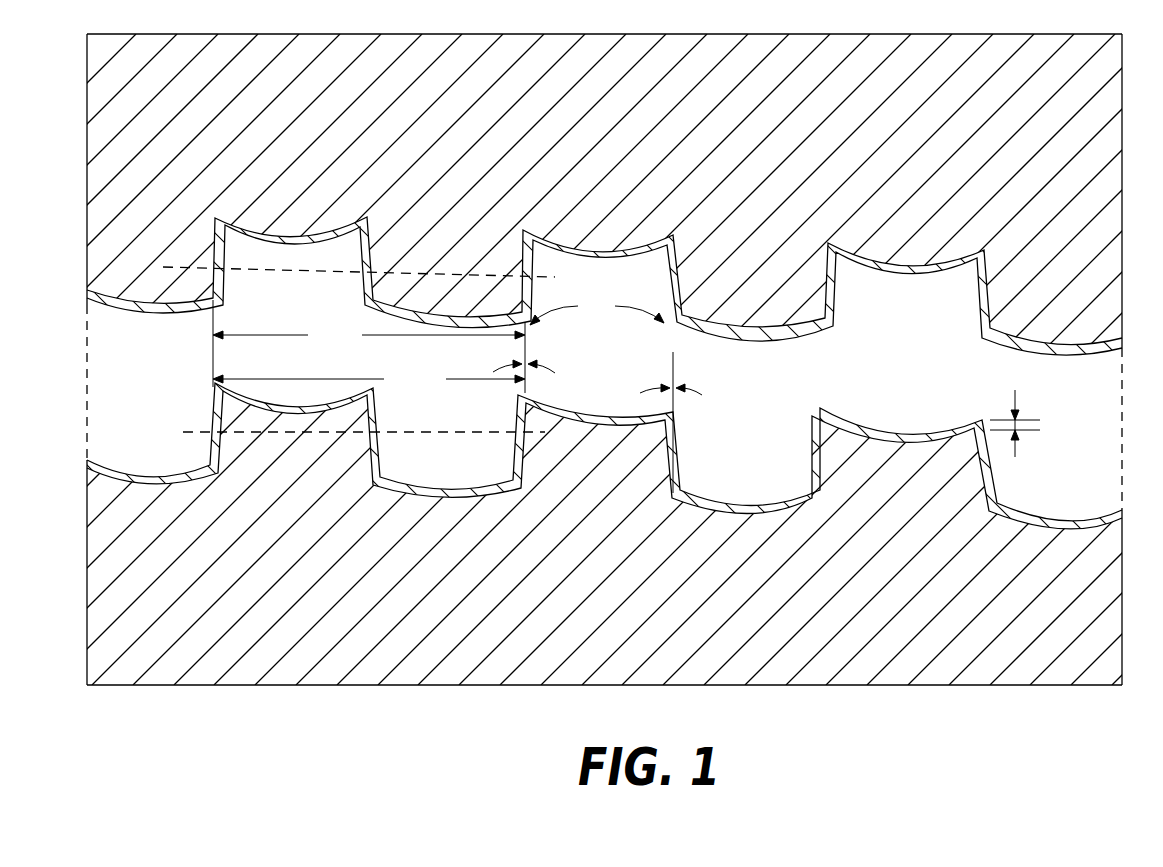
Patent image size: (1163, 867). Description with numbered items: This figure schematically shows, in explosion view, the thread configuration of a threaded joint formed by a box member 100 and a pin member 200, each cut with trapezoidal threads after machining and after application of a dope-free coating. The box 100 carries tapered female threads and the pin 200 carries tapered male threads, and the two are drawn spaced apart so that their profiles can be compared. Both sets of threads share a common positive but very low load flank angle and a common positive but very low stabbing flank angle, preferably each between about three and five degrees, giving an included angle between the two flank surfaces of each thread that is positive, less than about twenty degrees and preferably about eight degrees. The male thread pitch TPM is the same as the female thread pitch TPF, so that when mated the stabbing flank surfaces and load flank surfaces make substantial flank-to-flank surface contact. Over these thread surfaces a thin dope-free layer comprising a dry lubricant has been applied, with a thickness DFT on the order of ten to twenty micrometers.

The box member 100 is at (506, 153).
The pin member 200 is at (555, 593).
The female thread pitch TPF is at (369, 346).
The male thread pitch TPM is at (369, 379).
The dope-free coating thickness DFT is at (1045, 423).